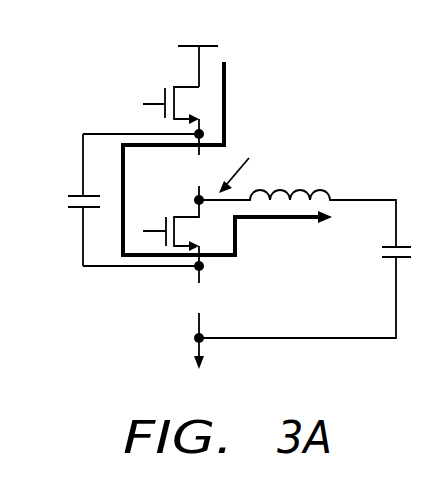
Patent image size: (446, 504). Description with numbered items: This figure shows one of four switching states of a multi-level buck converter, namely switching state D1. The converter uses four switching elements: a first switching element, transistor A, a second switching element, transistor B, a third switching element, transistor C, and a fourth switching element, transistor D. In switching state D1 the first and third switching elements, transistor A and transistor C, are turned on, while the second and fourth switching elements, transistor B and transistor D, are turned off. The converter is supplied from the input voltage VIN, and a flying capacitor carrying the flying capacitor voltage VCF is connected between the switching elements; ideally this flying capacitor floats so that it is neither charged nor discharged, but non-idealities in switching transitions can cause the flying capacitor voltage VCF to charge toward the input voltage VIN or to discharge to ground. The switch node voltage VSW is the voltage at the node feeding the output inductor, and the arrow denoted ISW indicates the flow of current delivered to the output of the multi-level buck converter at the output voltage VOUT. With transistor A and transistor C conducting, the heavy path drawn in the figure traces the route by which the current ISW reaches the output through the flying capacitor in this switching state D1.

The transistor A is at (179, 113).
The transistor B is at (204, 169).
The transistor C is at (179, 233).
The transistor D is at (205, 302).
The switching state D1 is at (201, 368).
The input voltage VIN is at (198, 56).
The flying capacitor voltage VCF is at (124, 200).
The switch node voltage VSW is at (247, 165).
The output voltage VOUT is at (305, 257).
The switch current ISW is at (227, 158).